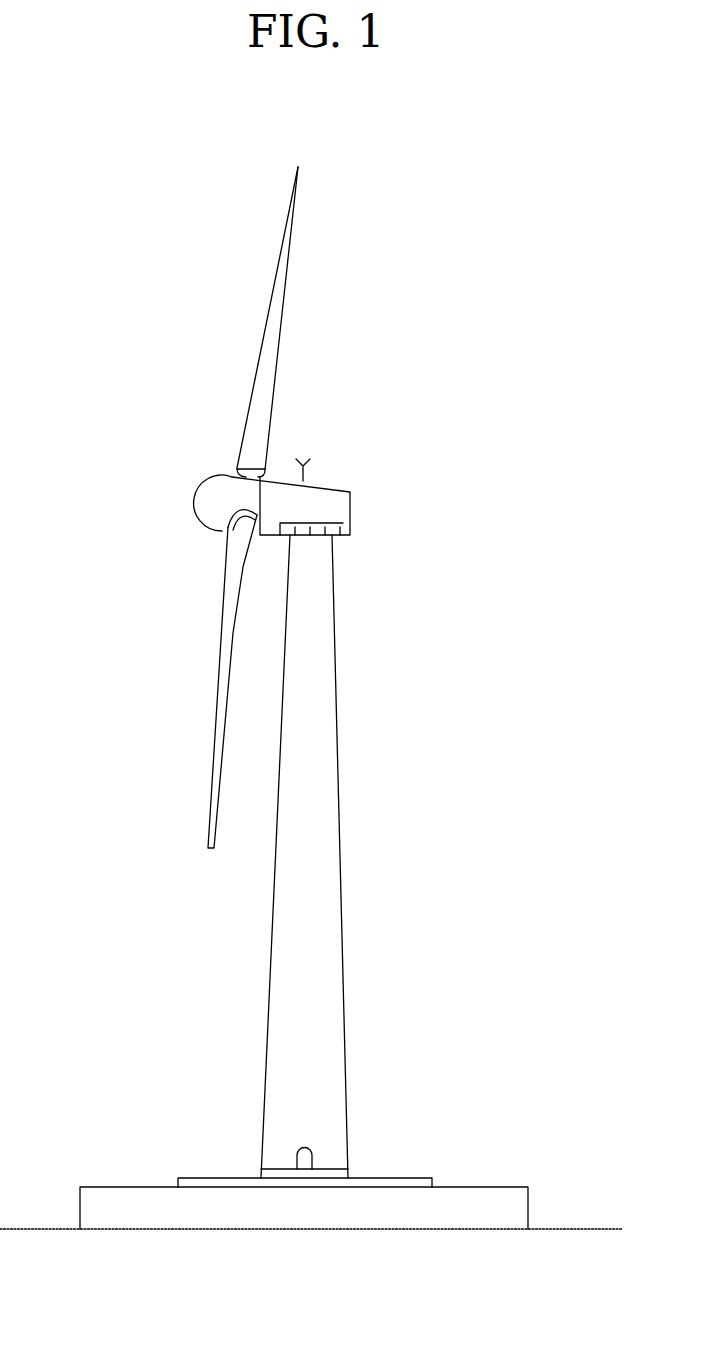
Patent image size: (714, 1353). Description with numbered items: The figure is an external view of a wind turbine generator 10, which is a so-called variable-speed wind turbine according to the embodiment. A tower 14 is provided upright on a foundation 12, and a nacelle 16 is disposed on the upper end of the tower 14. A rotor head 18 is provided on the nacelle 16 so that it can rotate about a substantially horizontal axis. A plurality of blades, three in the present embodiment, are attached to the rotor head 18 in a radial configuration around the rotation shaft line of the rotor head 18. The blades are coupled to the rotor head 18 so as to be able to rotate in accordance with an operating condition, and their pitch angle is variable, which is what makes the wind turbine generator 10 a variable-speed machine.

The wind turbine generator 10 is at (468, 430).
The foundation 12 is at (492, 1187).
The tower 14 is at (338, 707).
The nacelle 16 is at (330, 488).
The rotor head 18 is at (207, 498).